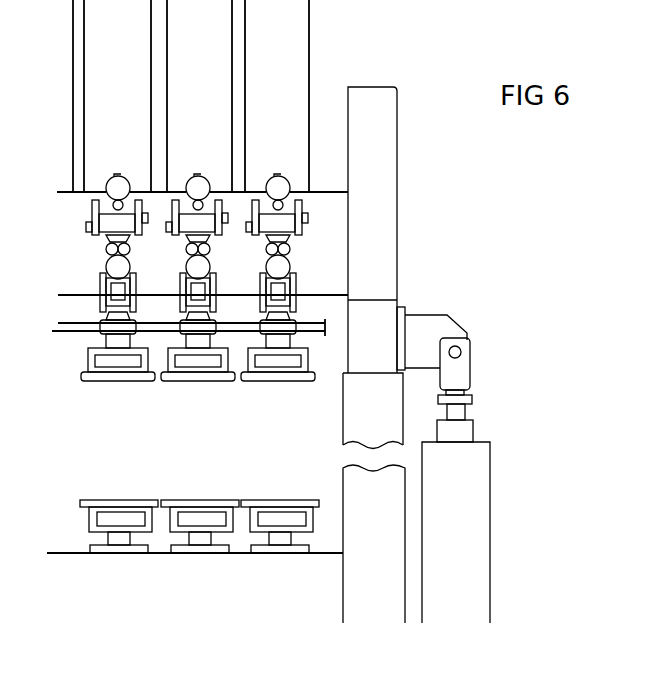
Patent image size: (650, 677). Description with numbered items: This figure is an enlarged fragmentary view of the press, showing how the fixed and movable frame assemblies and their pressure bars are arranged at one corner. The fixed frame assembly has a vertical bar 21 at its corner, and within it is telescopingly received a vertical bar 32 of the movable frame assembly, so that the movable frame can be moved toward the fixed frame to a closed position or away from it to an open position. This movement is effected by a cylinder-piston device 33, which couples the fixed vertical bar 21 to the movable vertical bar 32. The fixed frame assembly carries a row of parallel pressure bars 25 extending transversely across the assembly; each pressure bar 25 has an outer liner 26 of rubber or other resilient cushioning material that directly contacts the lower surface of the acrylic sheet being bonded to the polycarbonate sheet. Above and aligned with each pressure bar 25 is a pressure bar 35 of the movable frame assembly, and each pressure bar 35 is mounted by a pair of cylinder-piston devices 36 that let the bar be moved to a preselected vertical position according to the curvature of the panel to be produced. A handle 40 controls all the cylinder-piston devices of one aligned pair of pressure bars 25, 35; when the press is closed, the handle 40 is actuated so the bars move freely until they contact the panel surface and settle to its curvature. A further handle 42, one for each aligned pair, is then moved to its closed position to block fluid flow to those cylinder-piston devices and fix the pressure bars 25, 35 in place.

The vertical bar 21 is at (357, 568).
The pressure bar 25 is at (90, 523).
The outer liner 26 is at (113, 500).
The vertical bar 32 is at (380, 323).
The cylinder-piston device 33 is at (475, 489).
The pressure bar 35 is at (88, 354).
The cylinder-piston device 36 is at (309, 28).
The handle 40 is at (289, 183).
The handle 42 is at (290, 268).